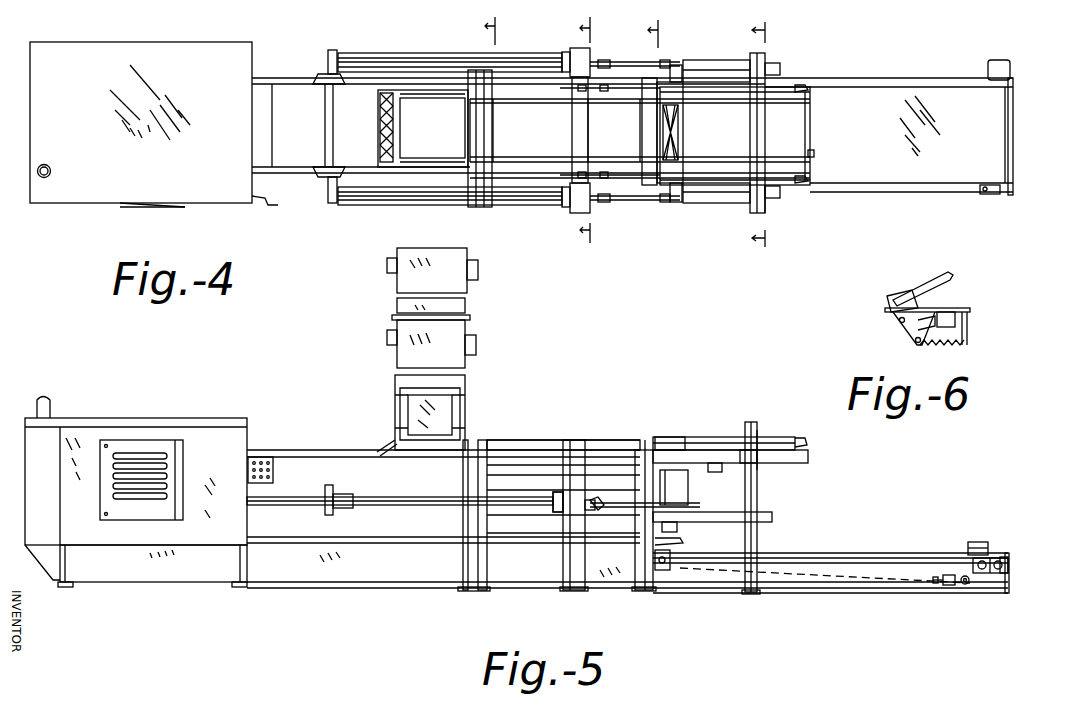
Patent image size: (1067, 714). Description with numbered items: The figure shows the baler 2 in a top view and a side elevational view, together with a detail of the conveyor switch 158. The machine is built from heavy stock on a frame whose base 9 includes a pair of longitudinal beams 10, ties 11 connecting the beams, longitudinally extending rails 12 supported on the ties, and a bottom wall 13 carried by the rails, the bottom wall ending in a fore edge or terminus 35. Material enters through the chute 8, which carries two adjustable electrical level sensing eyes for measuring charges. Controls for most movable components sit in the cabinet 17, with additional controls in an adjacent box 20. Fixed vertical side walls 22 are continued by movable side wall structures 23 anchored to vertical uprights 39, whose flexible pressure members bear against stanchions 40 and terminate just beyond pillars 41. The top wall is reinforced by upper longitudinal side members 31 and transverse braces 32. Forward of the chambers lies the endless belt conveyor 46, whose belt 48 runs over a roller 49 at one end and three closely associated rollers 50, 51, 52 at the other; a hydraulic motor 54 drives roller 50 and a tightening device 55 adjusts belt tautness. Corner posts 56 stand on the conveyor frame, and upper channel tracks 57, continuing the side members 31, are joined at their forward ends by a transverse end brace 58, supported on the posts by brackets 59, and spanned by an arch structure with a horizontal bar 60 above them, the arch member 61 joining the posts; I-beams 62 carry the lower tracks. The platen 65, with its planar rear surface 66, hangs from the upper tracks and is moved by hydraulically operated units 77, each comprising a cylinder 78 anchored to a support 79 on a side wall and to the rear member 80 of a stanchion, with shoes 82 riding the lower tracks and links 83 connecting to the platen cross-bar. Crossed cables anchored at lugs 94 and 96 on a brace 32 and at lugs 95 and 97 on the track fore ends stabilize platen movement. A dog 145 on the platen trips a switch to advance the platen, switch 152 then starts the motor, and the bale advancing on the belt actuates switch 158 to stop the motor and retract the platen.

In FIG. 4, the machine or baler 2 is at (760, 135).
In FIG. 4, the chute 8 is at (423, 128).
In FIG. 5, the chute 8 is at (465, 318).
In FIG. 5, the base 9 is at (302, 575).
In FIG. 4, the longitudinal beams 10 is at (562, 133).
In FIG. 5, the longitudinal beams 10 is at (356, 578).
In FIG. 4, the ties 11 is at (591, 132).
In FIG. 4, the rails 12 is at (492, 112).
In FIG. 4, the bottom wall 13 is at (646, 112).
In FIG. 4, the cabinet 17 is at (233, 66).
In FIG. 5, the cabinet 17 is at (216, 430).
In FIG. 4, the box 20 is at (262, 190).
In FIG. 5, the box 20 is at (262, 455).
In FIG. 5, the side walls 22 is at (395, 458).
In FIG. 5, the movable side wall structures 23 is at (405, 491).
In FIG. 5, the upper longitudinal side members 31 is at (508, 440).
In FIG. 4, the transverse braces 32 is at (485, 137).
In FIG. 5, the transverse braces 32 is at (646, 445).
In FIG. 5, the fore edge or terminus 35 is at (683, 541).
In FIG. 4, the vertical uprights 39 is at (470, 195).
In FIG. 5, the vertical uprights 39 is at (476, 442).
In FIG. 4, the stanchions 40 is at (577, 210).
In FIG. 5, the stanchions 40 is at (570, 440).
In FIG. 4, the pillars 41 is at (655, 202).
In FIG. 5, the pillars 41 is at (636, 455).
In FIG. 4, the endless belt conveyor 46 is at (906, 136).
In FIG. 5, the endless belt conveyor 46 is at (831, 564).
In FIG. 4, the endless belt 48 is at (1018, 117).
In FIG. 5, the endless belt 48 is at (860, 558).
In FIG. 5, the roller 49 is at (662, 570).
In FIG. 5, the roller 50 is at (992, 558).
In FIG. 5, the roller 51 is at (980, 572).
In FIG. 5, the roller 52 is at (966, 585).
In FIG. 4, the hydraulic motor 54 is at (1012, 65).
In FIG. 5, the hydraulic motor 54 is at (1009, 560).
In FIG. 5, the tightening device 55 is at (948, 588).
In FIG. 4, the corner posts 56 is at (756, 210).
In FIG. 5, the corner posts 56 is at (757, 536).
In FIG. 4, the upper channel tracks 57 is at (728, 70).
In FIG. 5, the upper channel tracks 57 is at (705, 450).
In FIG. 4, the transverse end brace 58 is at (810, 116).
In FIG. 4, the brackets 59 is at (765, 208).
In FIG. 5, the brackets 59 is at (760, 435).
In FIG. 4, the horizontal bar 60 is at (758, 138).
In FIG. 5, the column top 61 is at (752, 422).
In FIG. 5, the I-beams 62 is at (772, 517).
In FIG. 5, the platen 65 is at (682, 490).
In FIG. 5, the rear surface 66 is at (677, 527).
In FIG. 4, the hydraulically operated units 77 is at (398, 56).
In FIG. 5, the hydraulically operated units 77 is at (372, 509).
In FIG. 4, the cylinder 78 is at (430, 207).
In FIG. 5, the cylinder 78 is at (376, 492).
In FIG. 4, the support 79 is at (322, 74).
In FIG. 5, the support 79 is at (300, 500).
In FIG. 4, the rear member 80 is at (572, 141).
In FIG. 5, the rear member 80 is at (560, 440).
In FIG. 5, the shoes 82 is at (565, 514).
In FIG. 4, the links 83 is at (636, 60).
In FIG. 5, the links 83 is at (598, 500).
In FIG. 4, the lug 94 is at (575, 86).
In FIG. 4, the lug 95 is at (815, 178).
In FIG. 5, the lug 95 is at (808, 443).
In FIG. 4, the lug 96 is at (572, 178).
In FIG. 4, the lug 97 is at (805, 92).
In FIG. 5, the dog 145 is at (712, 472).
In FIG. 4, the switch 152 is at (820, 152).
In FIG. 4, the switch 158 is at (982, 184).
In FIG. 6, the switch 158 is at (950, 308).
In FIG. 5, the switch 158 is at (980, 542).